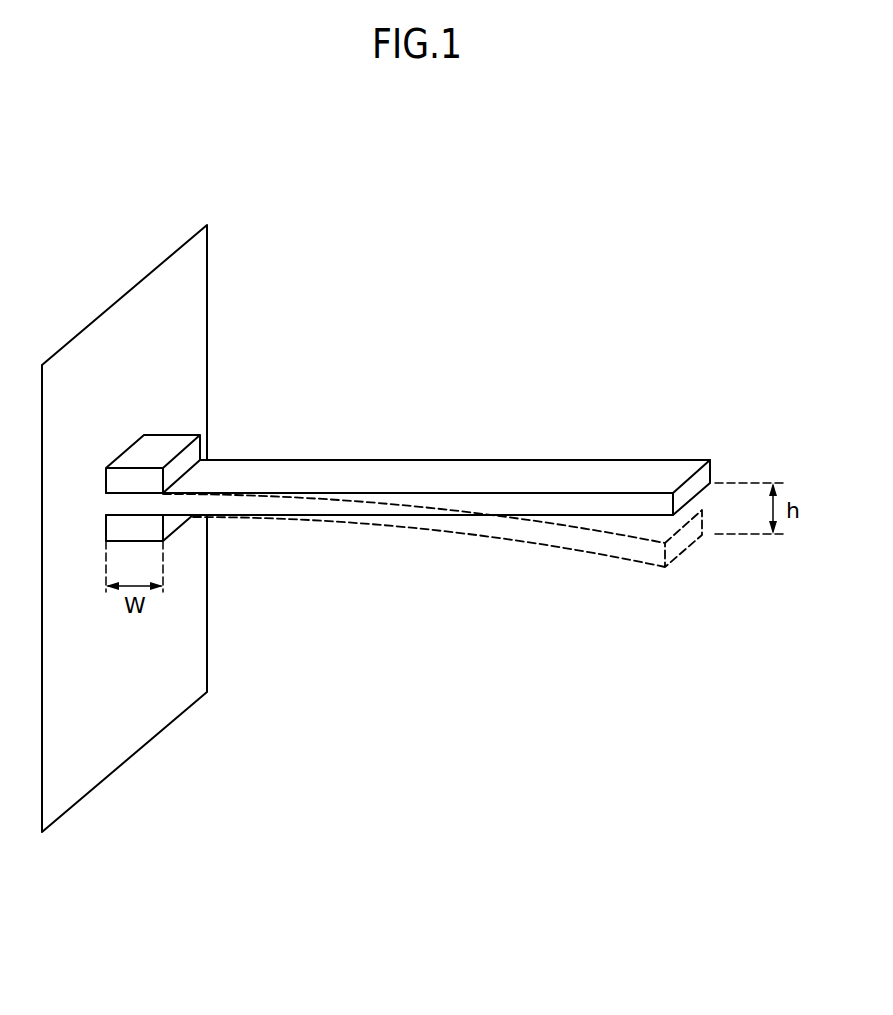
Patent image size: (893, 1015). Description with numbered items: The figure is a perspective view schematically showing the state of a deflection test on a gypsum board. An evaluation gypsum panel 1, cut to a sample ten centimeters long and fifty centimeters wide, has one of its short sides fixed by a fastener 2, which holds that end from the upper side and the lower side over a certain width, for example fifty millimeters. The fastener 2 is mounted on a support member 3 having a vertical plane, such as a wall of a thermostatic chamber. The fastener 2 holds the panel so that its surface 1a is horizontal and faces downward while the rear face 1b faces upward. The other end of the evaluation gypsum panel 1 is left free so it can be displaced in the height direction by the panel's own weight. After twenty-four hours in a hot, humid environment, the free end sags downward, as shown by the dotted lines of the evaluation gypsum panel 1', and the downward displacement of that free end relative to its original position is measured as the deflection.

The evaluation gypsum panel 1 is at (408, 500).
The surface 1a is at (580, 527).
The rear face 1b is at (394, 470).
The evaluation gypsum panel after 24 hours 1' is at (432, 560).
The fastener 2 is at (157, 443).
The support member 3 is at (195, 308).